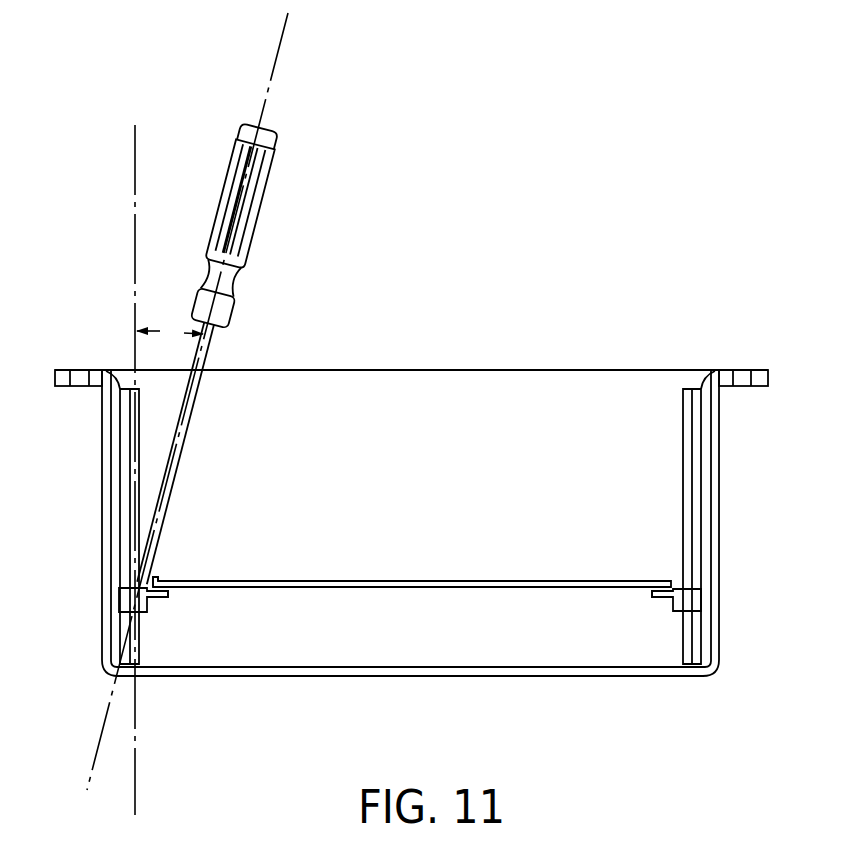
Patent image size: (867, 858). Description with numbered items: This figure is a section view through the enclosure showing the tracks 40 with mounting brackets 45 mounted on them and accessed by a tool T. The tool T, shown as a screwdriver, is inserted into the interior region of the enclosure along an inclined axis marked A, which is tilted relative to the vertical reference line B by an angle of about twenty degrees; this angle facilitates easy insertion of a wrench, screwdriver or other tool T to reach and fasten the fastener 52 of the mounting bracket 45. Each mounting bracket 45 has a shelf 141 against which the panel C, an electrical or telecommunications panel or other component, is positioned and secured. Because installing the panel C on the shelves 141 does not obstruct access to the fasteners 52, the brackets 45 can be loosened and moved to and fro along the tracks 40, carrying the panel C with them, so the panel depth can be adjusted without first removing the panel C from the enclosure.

The track 40 is at (146, 637).
The mounting bracket 45 is at (179, 601).
The fastener 52 is at (161, 578).
The shelf 141 is at (170, 597).
The panel C is at (428, 580).
The tool T is at (258, 226).
The tool axis A is at (189, 413).
The vertical reference axis B is at (140, 469).